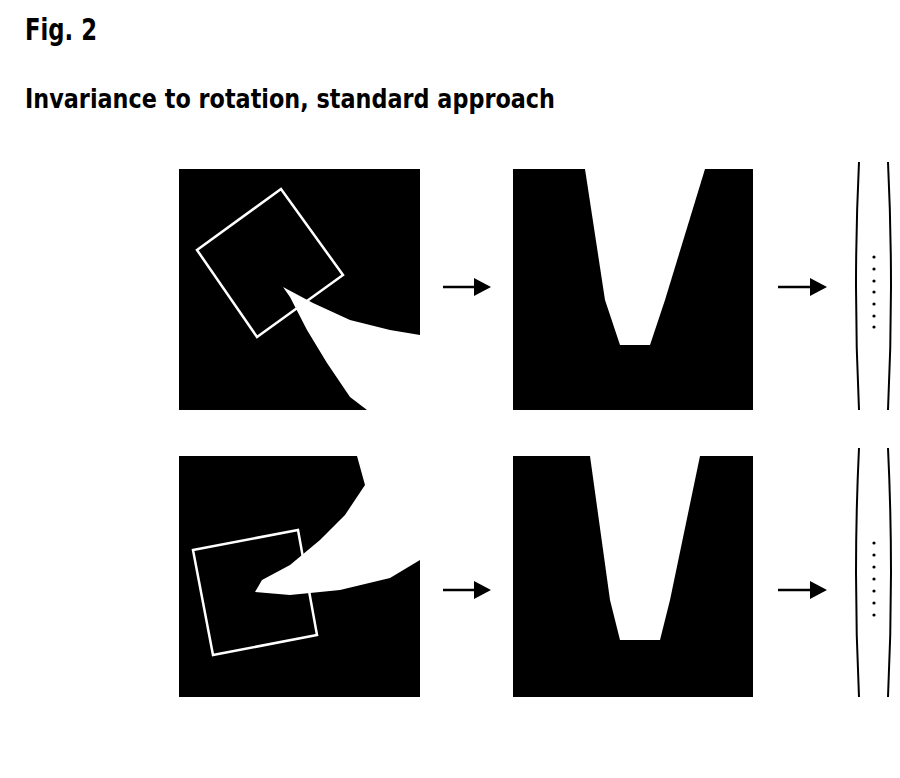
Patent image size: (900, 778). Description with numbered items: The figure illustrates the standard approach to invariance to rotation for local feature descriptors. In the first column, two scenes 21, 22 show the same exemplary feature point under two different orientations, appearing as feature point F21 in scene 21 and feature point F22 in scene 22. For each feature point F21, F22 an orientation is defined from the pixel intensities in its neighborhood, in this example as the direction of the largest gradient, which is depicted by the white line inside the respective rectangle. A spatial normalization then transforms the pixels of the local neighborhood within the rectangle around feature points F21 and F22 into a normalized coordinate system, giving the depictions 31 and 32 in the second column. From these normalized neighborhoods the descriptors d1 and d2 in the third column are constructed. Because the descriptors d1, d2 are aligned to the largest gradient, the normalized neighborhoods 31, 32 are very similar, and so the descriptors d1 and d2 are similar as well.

The scene 21 is at (177, 335).
The scene 22 is at (177, 622).
The depiction 31 is at (515, 337).
The depiction 32 is at (513, 632).
The feature point F21 is at (275, 268).
The feature point F22 is at (255, 593).
The descriptor d1 is at (857, 388).
The descriptor d2 is at (857, 675).